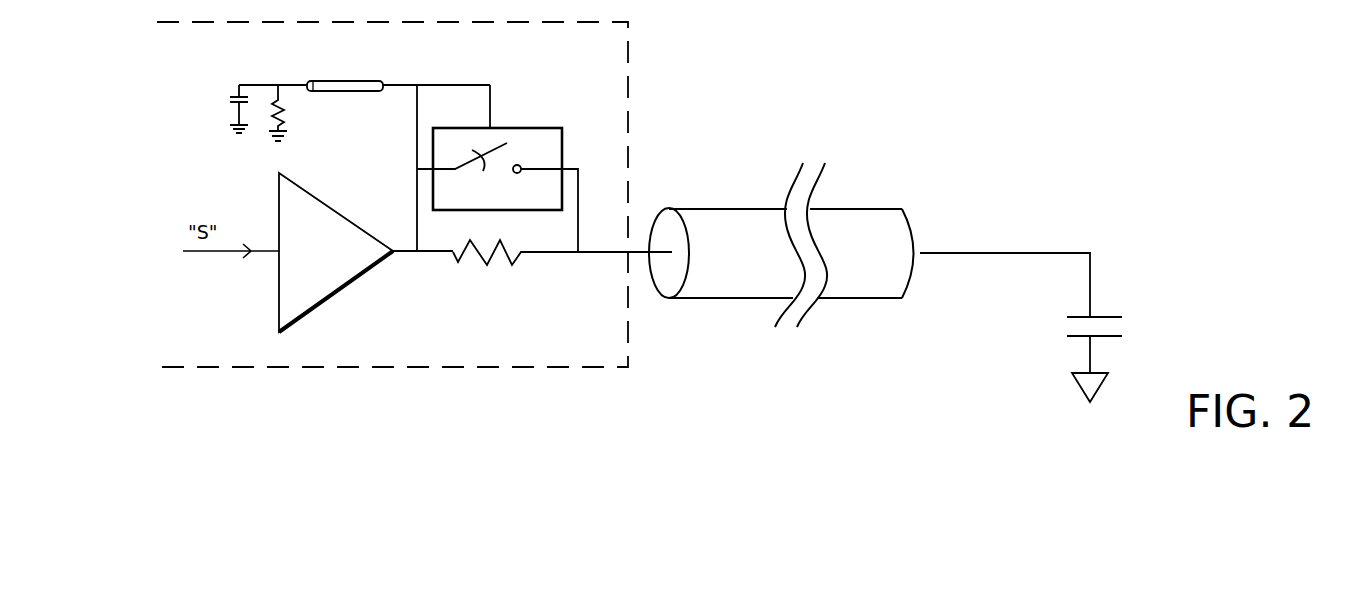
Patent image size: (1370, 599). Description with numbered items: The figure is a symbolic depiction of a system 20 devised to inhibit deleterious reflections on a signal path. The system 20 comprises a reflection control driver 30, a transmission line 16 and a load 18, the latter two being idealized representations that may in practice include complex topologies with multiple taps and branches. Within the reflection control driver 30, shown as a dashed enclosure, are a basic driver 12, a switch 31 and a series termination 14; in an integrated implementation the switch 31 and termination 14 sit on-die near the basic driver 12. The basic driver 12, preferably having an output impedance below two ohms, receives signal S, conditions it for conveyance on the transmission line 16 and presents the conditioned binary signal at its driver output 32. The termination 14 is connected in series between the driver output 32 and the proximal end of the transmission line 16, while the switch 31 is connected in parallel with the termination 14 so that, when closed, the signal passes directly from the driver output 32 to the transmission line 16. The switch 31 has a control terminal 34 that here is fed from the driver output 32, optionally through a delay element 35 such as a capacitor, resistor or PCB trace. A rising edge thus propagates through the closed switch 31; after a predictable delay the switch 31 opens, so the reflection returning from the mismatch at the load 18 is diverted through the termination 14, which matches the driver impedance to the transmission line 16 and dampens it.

The basic driver 12 is at (327, 275).
The series termination 14 is at (496, 262).
The transmission line 16 is at (712, 275).
The load 18 is at (1072, 318).
The system 20 is at (933, 111).
The reflection control driver 30 is at (435, 367).
The switch 31 is at (556, 152).
The driver output 32 is at (409, 255).
The control terminal 34 is at (491, 127).
The delay element 35 is at (288, 85).